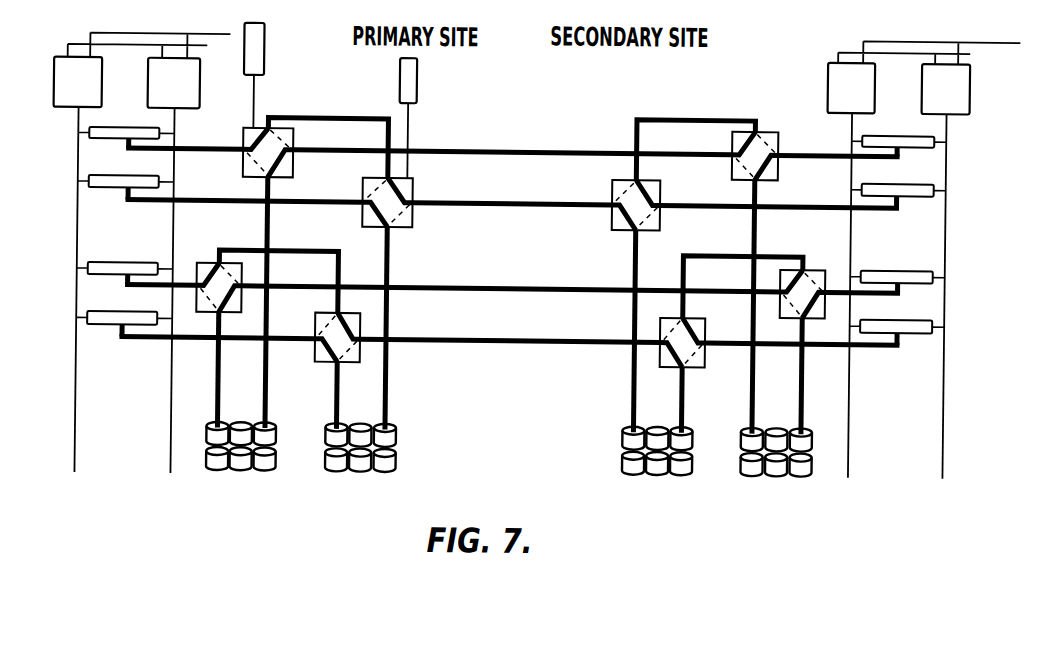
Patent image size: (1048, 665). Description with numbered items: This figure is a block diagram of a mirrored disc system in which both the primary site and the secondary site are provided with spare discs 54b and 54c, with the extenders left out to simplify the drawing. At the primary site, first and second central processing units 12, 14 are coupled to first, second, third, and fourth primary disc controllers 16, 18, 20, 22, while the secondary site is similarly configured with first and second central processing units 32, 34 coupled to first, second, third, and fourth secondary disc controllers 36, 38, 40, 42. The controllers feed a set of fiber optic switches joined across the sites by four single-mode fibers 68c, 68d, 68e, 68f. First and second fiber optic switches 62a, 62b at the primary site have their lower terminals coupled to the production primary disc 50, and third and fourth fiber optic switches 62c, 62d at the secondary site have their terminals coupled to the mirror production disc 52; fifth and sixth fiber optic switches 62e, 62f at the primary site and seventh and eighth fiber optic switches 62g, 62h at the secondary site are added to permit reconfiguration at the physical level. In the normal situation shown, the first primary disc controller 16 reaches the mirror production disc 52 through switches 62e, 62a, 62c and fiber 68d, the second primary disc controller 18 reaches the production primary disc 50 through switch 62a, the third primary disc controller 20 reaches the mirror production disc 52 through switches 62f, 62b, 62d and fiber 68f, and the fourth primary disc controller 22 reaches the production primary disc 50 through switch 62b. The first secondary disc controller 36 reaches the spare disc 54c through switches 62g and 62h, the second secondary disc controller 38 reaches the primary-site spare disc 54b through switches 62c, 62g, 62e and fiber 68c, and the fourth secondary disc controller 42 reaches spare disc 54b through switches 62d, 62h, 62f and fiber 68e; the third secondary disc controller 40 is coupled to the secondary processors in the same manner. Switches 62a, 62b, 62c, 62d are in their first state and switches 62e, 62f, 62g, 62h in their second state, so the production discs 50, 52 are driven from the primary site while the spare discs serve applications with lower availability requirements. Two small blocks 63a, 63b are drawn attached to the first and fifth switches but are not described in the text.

The first central processing unit 12 is at (93, 102).
The second central processing unit 14 is at (185, 102).
The first primary disc controller 16 is at (106, 132).
The second primary disc controller 18 is at (95, 180).
The third primary disc controller 20 is at (100, 267).
The fourth primary disc controller 22 is at (90, 316).
The first central processing unit 32 is at (866, 98).
The second central processing unit 34 is at (963, 98).
The first secondary disc controller 36 is at (884, 132).
The second secondary disc controller 38 is at (904, 180).
The third secondary disc controller 40 is at (896, 267).
The fourth secondary disc controller 42 is at (897, 316).
The production primary disc 50 is at (396, 446).
The mirror production disc 52 is at (621, 439).
The spare disc 54b is at (208, 471).
The spare disc 54c is at (814, 467).
The first fiber optic switch 62a is at (412, 181).
The second fiber optic switch 62b is at (318, 365).
The third fiber optic switch 62c is at (660, 180).
The fourth fiber optic switch 62d is at (705, 317).
The fifth fiber optic switch 62e is at (255, 131).
The sixth fiber optic switch 62f is at (200, 266).
The seventh fiber optic switch 62g is at (764, 128).
The eighth fiber optic switch 62h is at (805, 267).
The switch controller 63a is at (418, 81).
The switch controller 63b is at (265, 45).
The first single-mode fiber 68c is at (499, 150).
The second single-mode fiber 68d is at (499, 202).
The third single-mode fiber 68e is at (500, 287).
The fourth single-mode fiber 68f is at (500, 340).